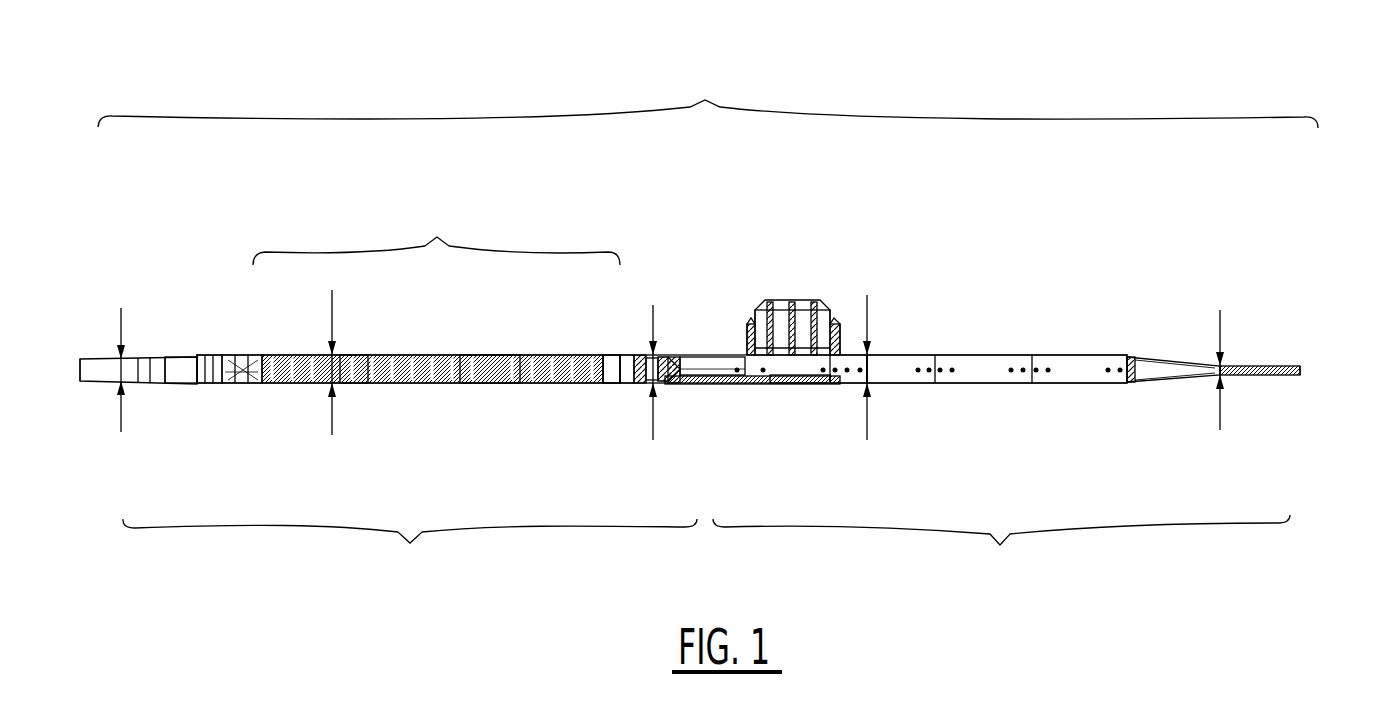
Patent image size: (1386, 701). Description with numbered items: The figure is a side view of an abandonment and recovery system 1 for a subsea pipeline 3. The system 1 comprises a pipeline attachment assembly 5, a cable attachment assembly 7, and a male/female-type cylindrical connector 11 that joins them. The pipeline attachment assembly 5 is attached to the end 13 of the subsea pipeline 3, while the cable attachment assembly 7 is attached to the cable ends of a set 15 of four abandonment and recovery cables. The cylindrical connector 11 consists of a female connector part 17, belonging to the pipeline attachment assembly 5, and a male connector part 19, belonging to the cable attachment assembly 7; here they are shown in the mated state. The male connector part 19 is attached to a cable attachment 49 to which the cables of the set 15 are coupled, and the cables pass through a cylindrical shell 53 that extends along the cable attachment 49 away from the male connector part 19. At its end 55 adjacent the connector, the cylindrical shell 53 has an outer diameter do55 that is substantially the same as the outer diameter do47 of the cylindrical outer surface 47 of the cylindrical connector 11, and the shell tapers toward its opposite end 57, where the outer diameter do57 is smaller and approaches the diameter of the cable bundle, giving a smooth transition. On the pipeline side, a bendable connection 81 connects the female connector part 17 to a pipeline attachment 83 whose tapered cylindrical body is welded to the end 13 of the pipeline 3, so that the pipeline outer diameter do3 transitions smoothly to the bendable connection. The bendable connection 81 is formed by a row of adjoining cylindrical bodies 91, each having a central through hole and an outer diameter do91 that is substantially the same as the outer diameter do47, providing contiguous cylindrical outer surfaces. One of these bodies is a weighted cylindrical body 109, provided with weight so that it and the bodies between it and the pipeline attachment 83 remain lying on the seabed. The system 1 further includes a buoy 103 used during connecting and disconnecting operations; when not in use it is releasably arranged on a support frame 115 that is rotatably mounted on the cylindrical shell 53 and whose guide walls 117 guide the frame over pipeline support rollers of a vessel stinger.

The abandonment and recovery system 1 is at (708, 97).
The subsea pipeline 3 is at (95, 372).
The pipeline attachment assembly 5 is at (410, 551).
The cable attachment assembly 7 is at (1001, 549).
The cylindrical connector 11 is at (670, 345).
The end of the subsea pipeline 13 is at (106, 332).
The set of A&R cables 15 is at (1298, 340).
The female connector part 17 is at (590, 413).
The male connector part 19 is at (668, 404).
The cylindrical outer surface 47 is at (640, 385).
The cable attachment 49 is at (722, 406).
The cylindrical shell 53 is at (1161, 279).
The end of the cylindrical shell 55 is at (942, 317).
The opposite end of the cylindrical shell 57 is at (1258, 403).
The bendable connection 81 is at (408, 293).
The pipeline attachment 83 is at (180, 362).
The cylindrical bodies 91 is at (497, 383).
The buoy 103 is at (800, 308).
The weighted cylindrical body 109 is at (363, 383).
The support frame 115 is at (835, 407).
The guide walls 117 is at (790, 385).
The outer diameter of the subsea pipeline do3 is at (142, 373).
The outer diameter of the cylindrical bodies do91 is at (358, 360).
The outer diameter of the cylindrical outer surface do47 is at (622, 363).
The outer diameter at the shell end do55 is at (896, 365).
The outer diameter at the opposite shell end do57 is at (1250, 363).